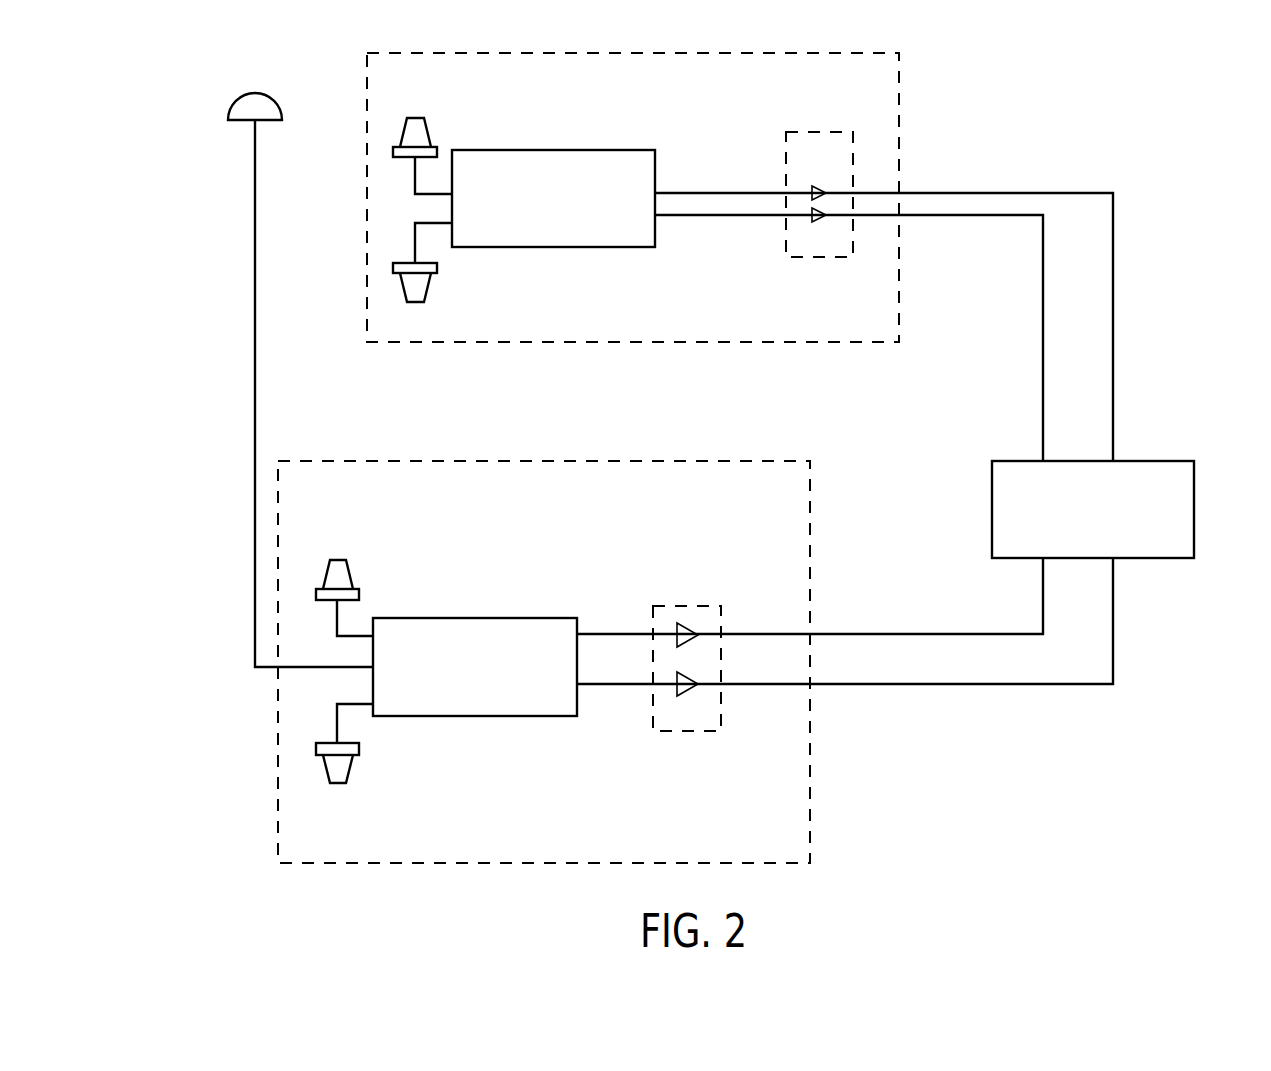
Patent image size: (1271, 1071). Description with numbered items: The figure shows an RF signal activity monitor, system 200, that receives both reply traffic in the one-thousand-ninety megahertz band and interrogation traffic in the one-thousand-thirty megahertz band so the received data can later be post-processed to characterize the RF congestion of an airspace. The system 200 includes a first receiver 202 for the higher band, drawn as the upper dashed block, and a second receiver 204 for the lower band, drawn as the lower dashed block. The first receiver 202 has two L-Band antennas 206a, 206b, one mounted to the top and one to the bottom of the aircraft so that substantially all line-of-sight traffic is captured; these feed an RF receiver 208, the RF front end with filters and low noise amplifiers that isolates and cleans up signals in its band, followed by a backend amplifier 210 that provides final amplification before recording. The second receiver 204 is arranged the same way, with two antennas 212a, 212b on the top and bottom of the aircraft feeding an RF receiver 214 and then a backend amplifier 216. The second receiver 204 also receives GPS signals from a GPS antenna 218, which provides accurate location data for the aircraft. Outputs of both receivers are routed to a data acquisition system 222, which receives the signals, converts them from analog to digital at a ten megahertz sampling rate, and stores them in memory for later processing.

The system 200 is at (175, 131).
The 1090 MHz receiver 202 is at (900, 120).
The 1030 MHz receiver 204 is at (763, 456).
The antenna 206a is at (428, 137).
The antenna 206b is at (428, 286).
The RF receiver 208 is at (657, 170).
The backend amplifier 210 is at (795, 264).
The antenna 212a is at (352, 576).
The antenna 212b is at (352, 770).
The RF receiver 214 is at (552, 718).
The backend amplifier 216 is at (689, 602).
The GPS antenna 218 is at (256, 96).
The data acquisition system 222 is at (1196, 478).